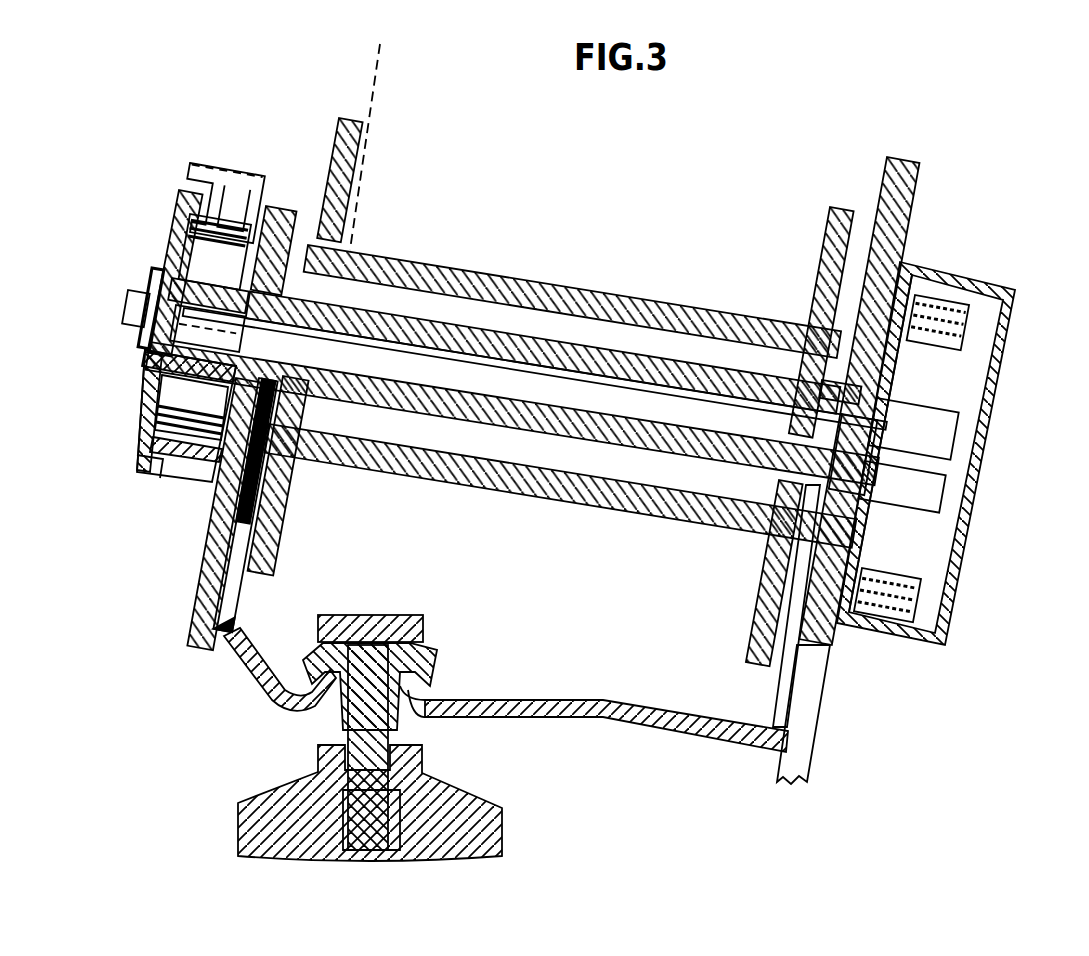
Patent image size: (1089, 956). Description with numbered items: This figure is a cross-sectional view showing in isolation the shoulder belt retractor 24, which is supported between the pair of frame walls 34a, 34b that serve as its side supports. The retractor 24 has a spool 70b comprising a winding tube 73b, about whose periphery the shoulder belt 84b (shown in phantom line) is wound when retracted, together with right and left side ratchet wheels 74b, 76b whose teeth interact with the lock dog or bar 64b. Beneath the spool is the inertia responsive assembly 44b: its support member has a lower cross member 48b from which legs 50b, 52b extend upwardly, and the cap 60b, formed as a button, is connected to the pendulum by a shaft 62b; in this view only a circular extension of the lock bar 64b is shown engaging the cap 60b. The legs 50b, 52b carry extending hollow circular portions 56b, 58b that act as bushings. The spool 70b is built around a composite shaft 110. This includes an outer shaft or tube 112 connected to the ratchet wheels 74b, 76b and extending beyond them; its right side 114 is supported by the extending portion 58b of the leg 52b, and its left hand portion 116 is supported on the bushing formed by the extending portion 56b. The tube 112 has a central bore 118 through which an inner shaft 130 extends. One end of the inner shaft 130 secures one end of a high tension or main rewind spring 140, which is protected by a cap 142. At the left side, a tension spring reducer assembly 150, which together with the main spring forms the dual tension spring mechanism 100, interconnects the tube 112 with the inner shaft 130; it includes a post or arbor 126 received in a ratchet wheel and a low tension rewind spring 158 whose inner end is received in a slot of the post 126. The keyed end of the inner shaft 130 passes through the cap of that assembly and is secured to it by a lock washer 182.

The shoulder belt retractor 24 is at (632, 238).
The frame wall 34a is at (212, 532).
The frame wall 34b is at (815, 698).
The inertia responsive assembly 44b is at (490, 830).
The lower cross member 48b is at (560, 716).
The leg 50b is at (288, 486).
The leg 52b is at (770, 592).
The extending hollow circular portion 56b is at (306, 300).
The extending hollow circular portion 58b is at (876, 396).
The cap 60b is at (438, 660).
The shaft 62b is at (392, 736).
The lock dog 64b is at (428, 628).
The spool 70b is at (354, 250).
The winding tube 73b is at (456, 276).
The right side ratchet wheel 74b is at (358, 136).
The left side ratchet wheel 76b is at (830, 232).
The shoulder belt 84b is at (380, 48).
The dual tension spring mechanism 100 is at (140, 272).
The composite shaft 110 is at (650, 462).
The outer shaft 112 is at (512, 445).
The right side of outer shaft 114 is at (862, 492).
The left hand portion of outer shaft 116 is at (266, 318).
The central bore 118 is at (540, 372).
The post 126 is at (180, 262).
The inner shaft 130 is at (470, 356).
The main rewind spring 140 is at (938, 298).
The cap 142 is at (1014, 292).
The tension spring reducer assembly 150 is at (138, 357).
The low tension rewind spring 158 is at (125, 398).
The lock washer 182 is at (128, 300).